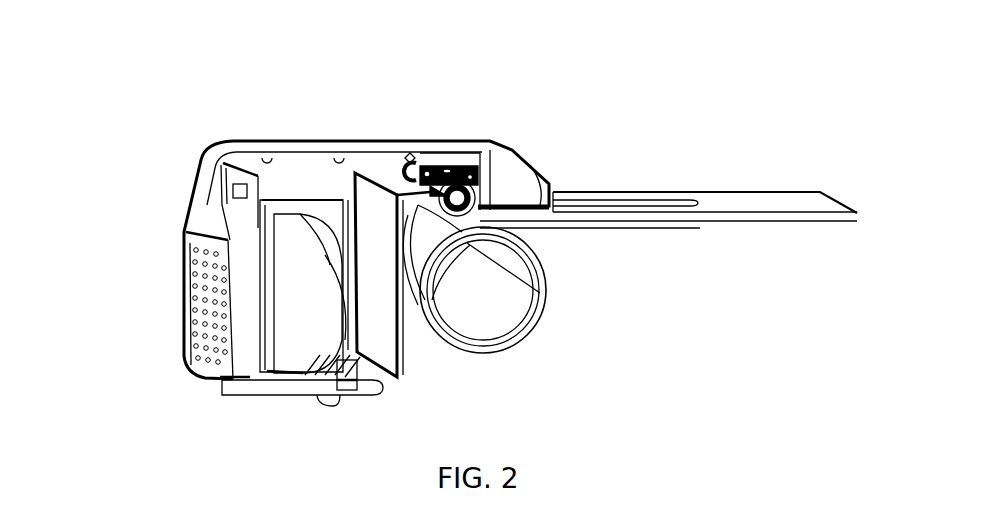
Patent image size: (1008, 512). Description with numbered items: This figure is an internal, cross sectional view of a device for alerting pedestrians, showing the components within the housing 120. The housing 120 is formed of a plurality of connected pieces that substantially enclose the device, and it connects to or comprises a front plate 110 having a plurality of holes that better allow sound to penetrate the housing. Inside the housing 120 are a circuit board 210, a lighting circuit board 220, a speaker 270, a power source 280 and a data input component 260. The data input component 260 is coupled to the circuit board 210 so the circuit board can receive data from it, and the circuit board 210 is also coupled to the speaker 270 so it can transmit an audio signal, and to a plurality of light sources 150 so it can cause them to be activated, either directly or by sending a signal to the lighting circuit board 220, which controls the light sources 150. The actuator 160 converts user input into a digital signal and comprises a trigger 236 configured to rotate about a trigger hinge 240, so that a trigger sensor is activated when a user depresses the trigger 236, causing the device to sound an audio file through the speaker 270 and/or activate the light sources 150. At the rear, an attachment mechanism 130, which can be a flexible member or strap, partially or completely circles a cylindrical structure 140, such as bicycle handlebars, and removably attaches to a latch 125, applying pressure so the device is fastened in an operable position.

The front plate 110 is at (200, 316).
The housing 120 is at (197, 397).
The latch 125 is at (333, 408).
The attachment mechanism 130 is at (661, 183).
The cylindrical structure 140 is at (548, 307).
The light sources 150 is at (242, 197).
The actuator 160 is at (488, 123).
The circuit board 210 is at (370, 205).
The lighting circuit board 220 is at (220, 203).
The trigger 236 is at (497, 153).
The trigger hinge 240 is at (477, 188).
The data input component 260 is at (357, 385).
The speaker 270 is at (290, 355).
The power source 280 is at (313, 213).